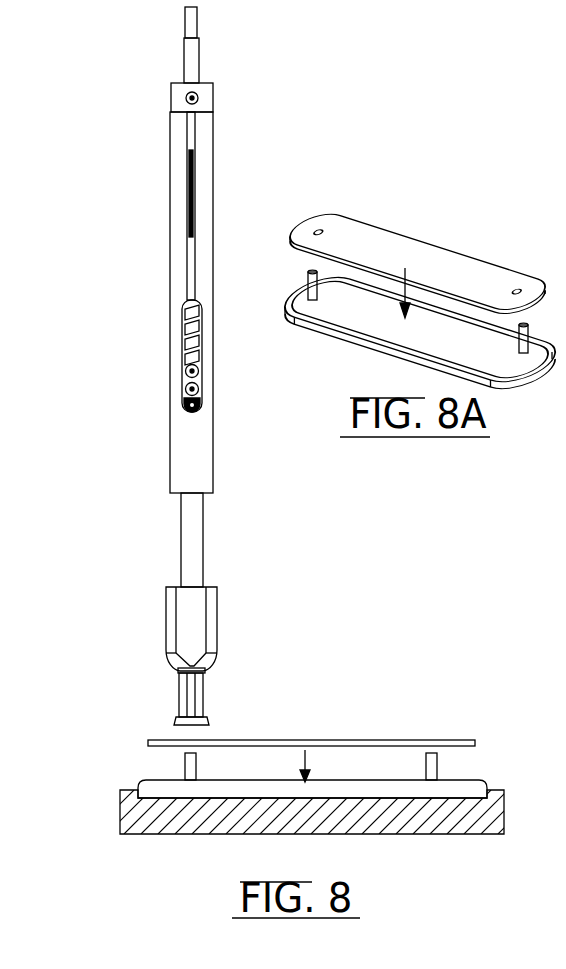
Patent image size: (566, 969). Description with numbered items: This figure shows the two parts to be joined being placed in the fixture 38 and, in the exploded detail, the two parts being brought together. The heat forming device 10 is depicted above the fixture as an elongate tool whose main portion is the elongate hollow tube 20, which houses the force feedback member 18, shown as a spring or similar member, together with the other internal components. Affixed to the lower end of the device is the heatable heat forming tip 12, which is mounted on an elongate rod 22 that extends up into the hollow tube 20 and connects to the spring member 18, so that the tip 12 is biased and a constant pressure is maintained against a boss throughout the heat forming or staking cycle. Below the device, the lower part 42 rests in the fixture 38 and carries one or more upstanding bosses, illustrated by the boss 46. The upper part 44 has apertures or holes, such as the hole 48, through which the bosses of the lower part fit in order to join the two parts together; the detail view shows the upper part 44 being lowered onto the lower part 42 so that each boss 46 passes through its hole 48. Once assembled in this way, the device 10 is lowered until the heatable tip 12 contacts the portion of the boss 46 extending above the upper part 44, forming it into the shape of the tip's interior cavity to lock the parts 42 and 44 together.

In FIG. 8, the heat forming device 10 is at (226, 116).
In FIG. 8, the elongate hollow tube 20 is at (180, 178).
In FIG. 8, the force feedback member 18 is at (183, 325).
In FIG. 8, the elongate rod 22 is at (198, 526).
In FIG. 8, the heatable heat forming tip 12 is at (200, 697).
In FIG. 8, the upper part 44 is at (337, 740).
In FIG. 8A, the upper part 44 is at (420, 252).
In FIG. 8, the boss 46 is at (195, 760).
In FIG. 8A, the boss 46 is at (308, 276).
In FIG. 8, the lower part 42 is at (170, 785).
In FIG. 8A, the lower part 42 is at (365, 340).
In FIG. 8, the fixture 38 is at (438, 823).
In FIG. 8A, the hole 48 is at (312, 234).